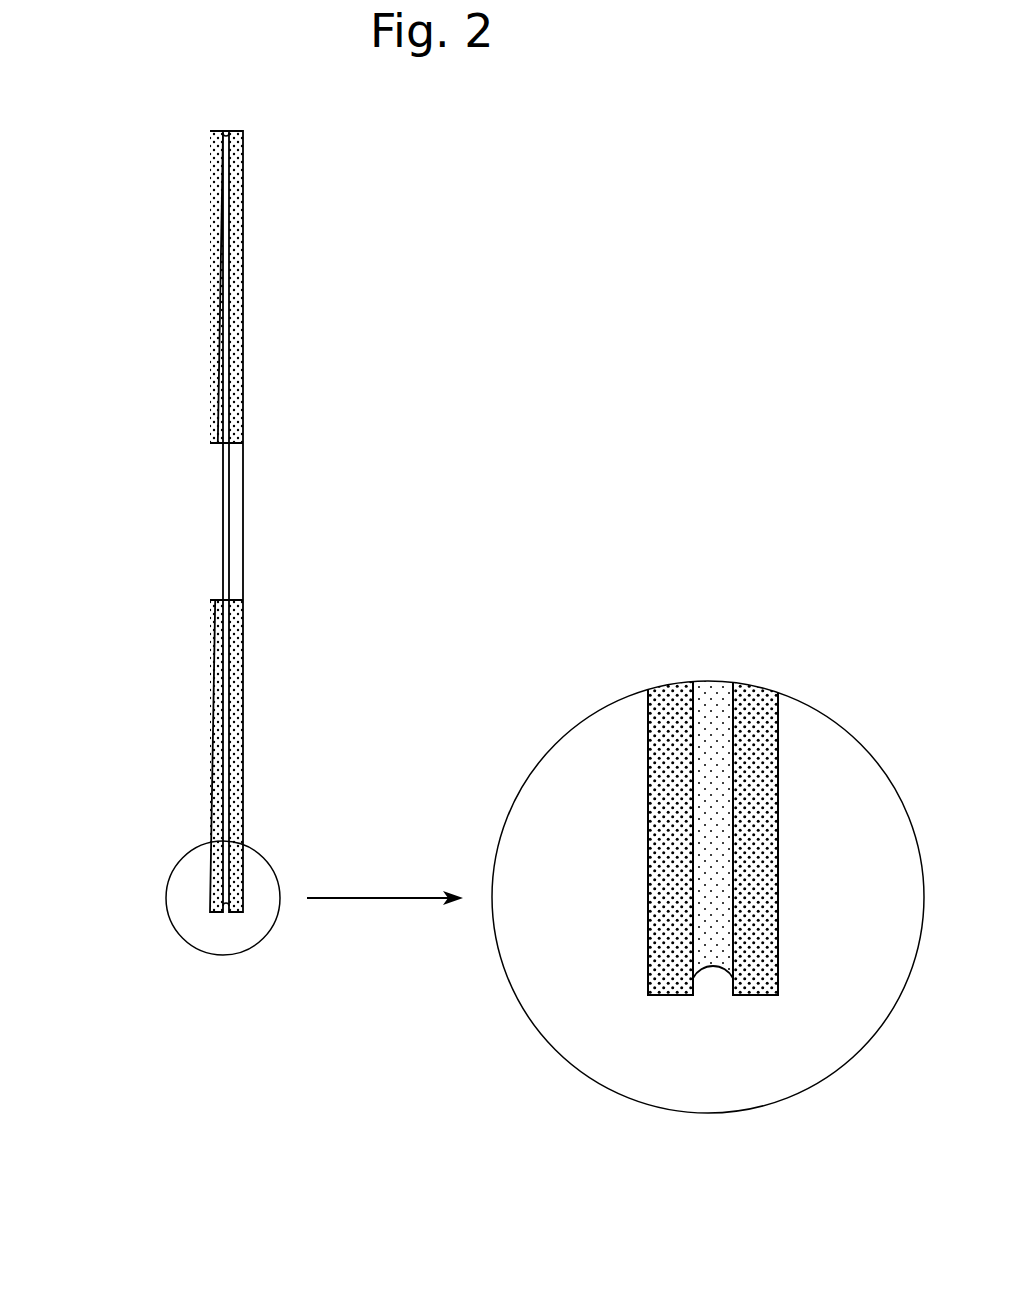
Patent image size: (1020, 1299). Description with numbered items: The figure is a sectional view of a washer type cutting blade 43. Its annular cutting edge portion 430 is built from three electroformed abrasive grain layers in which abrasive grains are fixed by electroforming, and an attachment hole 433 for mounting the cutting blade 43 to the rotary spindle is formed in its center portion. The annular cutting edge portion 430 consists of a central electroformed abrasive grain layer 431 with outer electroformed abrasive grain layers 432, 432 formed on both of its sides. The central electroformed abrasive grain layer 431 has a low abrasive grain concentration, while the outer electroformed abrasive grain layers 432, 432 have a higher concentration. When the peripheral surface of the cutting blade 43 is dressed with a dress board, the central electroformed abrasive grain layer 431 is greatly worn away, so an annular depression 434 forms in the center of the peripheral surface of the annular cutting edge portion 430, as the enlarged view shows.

The cutting blade 43 is at (273, 277).
The annular cutting edge portion 430 is at (207, 802).
The central electroformed abrasive grain layer 431 is at (228, 659).
The outer electroformed abrasive grain layers 432 is at (207, 755).
The attachment hole 433 is at (227, 517).
The annular depression 434 is at (717, 989).